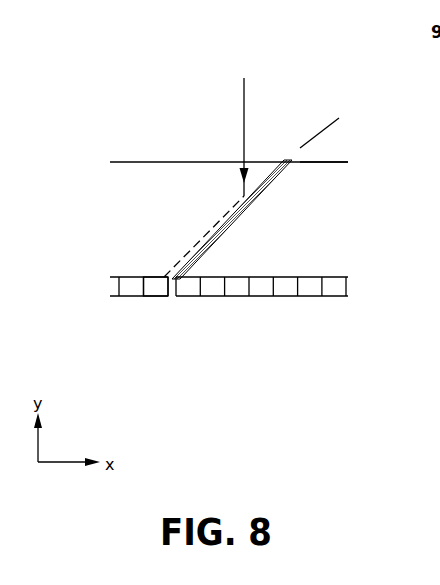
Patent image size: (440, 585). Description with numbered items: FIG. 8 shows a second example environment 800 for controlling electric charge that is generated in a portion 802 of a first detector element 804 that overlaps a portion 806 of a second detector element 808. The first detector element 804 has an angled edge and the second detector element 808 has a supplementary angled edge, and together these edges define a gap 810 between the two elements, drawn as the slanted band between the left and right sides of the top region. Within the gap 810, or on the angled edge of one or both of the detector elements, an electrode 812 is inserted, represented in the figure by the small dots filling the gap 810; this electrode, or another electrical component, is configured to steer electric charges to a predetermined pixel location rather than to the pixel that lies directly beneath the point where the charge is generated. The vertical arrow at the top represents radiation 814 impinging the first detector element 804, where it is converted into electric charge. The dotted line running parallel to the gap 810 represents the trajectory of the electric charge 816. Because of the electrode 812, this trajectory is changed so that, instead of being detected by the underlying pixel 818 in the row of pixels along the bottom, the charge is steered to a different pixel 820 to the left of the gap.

The second example environment 800 is at (130, 64).
The portion of the first detector element 802 is at (183, 190).
The first detector element 804 is at (150, 162).
The portion of the second detector element 806 is at (286, 190).
The second detector element 808 is at (335, 162).
The gap 810 is at (294, 152).
The electrode 812 is at (222, 229).
The radiation 814 is at (244, 111).
The trajectory of the electric charge 816 is at (187, 253).
The underlying pixel 818 is at (237, 297).
The different pixel 820 is at (157, 297).